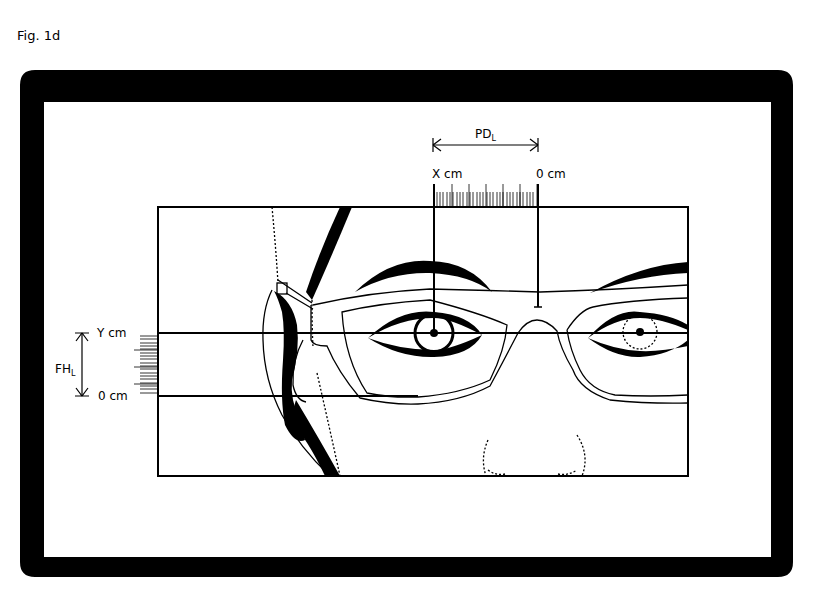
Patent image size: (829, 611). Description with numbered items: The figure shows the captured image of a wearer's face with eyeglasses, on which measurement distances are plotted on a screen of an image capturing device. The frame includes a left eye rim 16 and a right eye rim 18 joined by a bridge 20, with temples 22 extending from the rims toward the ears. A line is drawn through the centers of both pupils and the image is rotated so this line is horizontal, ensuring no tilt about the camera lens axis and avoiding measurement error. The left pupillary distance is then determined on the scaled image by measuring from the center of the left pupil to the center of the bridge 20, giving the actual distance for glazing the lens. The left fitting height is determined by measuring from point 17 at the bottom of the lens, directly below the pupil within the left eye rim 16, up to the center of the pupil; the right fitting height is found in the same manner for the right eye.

The left eye rim 16 is at (433, 402).
The point at the bottom of the lens 17 is at (418, 397).
The right eye rim 18 is at (615, 297).
The bridge 20 is at (540, 307).
The temples 22 is at (286, 292).